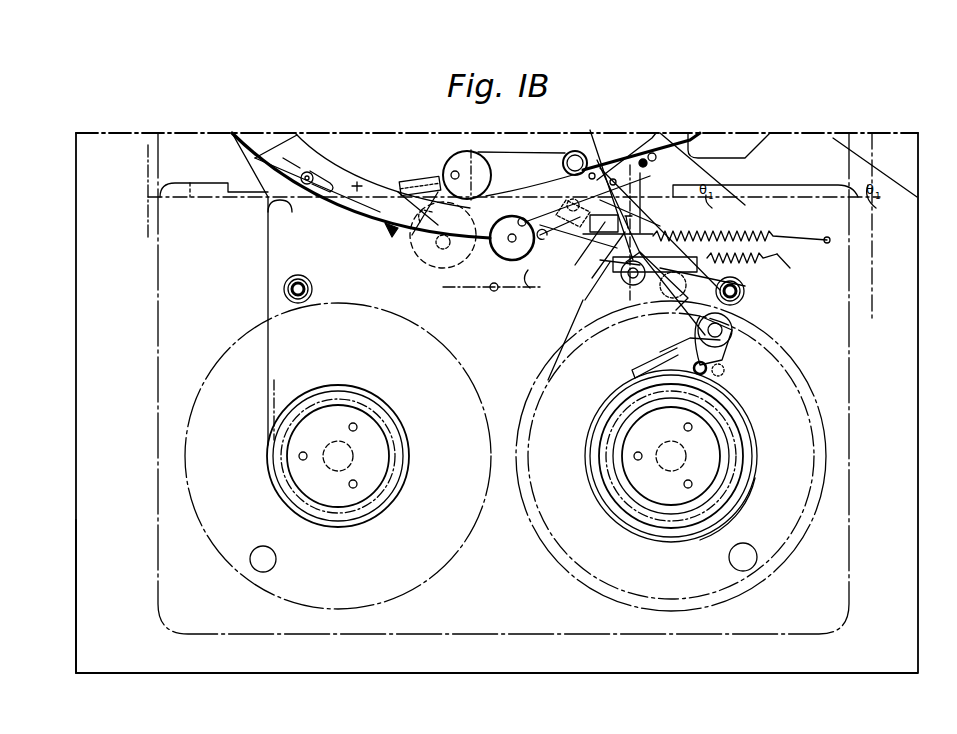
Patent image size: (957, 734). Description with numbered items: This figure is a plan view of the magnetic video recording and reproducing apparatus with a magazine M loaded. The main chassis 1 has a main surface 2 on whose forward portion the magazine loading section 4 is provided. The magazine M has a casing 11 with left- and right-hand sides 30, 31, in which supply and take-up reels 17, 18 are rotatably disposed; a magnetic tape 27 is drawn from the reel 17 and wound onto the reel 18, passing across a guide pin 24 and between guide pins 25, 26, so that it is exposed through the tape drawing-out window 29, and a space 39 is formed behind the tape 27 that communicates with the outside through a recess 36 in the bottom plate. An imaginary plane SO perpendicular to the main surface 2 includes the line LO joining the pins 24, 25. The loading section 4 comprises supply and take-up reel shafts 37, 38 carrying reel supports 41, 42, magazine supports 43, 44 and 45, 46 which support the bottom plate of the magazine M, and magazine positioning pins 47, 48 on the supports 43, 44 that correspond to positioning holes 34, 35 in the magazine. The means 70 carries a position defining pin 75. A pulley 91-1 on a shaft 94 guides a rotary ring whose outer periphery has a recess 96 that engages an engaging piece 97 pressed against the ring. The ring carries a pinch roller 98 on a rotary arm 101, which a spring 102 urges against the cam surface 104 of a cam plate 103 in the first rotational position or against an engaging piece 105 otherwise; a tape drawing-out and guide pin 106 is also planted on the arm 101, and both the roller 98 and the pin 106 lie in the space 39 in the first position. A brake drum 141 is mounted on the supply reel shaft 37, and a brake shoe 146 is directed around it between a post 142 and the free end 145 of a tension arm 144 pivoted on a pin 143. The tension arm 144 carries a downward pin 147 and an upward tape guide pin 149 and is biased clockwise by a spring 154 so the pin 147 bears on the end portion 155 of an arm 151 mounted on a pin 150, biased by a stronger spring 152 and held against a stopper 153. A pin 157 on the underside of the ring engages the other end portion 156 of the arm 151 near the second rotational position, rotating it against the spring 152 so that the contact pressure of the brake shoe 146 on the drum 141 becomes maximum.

The main chassis 1 is at (79, 347).
The main surface 2 is at (88, 525).
The magazine loading section 4 is at (496, 351).
The casing 11 is at (160, 254).
The supply reel 17 is at (580, 568).
The take-up reel 18 is at (446, 572).
The guide pin 24 is at (640, 200).
The guide pin 25 is at (288, 206).
The guide pin 26 is at (258, 222).
The magnetic tape 27 is at (562, 334).
The tape drawing-out window 29 is at (664, 190).
The left-hand side 30 is at (848, 368).
The right-hand side 31 is at (158, 398).
The positioning hole 34 is at (744, 286).
The positioning hole 35 is at (312, 289).
The recess 36 is at (494, 292).
The supply reel shaft 37 is at (666, 468).
The take-up reel shaft 38 is at (348, 452).
The space 39 is at (540, 287).
The reel support 41 is at (714, 452).
The reel support 42 is at (382, 450).
The magazine support 43 is at (742, 300).
The magazine support 44 is at (306, 280).
The magazine support 45 is at (729, 557).
The magazine support 46 is at (276, 559).
The magazine positioning pin 47 is at (712, 282).
The magazine positioning pin 48 is at (290, 273).
The means 70 is at (530, 174).
The position defining pin 75 is at (566, 160).
The pulley 91-1 is at (510, 219).
The shaft 94 is at (467, 175).
The recess 96 is at (529, 211).
The engaging piece 97 is at (498, 254).
The pinch roller 98 is at (428, 256).
The rotary arm 101 is at (376, 220).
The spring 102 is at (622, 172).
The cam plate 103 is at (360, 184).
The cam surface 104 is at (413, 184).
The engaging piece 105 is at (336, 178).
The tape drawing-out and guide pin 106 is at (390, 236).
The brake drum 141 is at (740, 423).
The post 142 is at (655, 356).
The pin 143 is at (722, 348).
The tension arm 144 is at (630, 215).
The free end 145 is at (724, 372).
The brake shoe 146 is at (750, 490).
The downward pin 147 is at (649, 256).
The upward tape guide pin 149 is at (590, 182).
The pin 150 is at (652, 281).
The arm 151 is at (606, 282).
The spring 152 is at (708, 238).
The stopper 153 is at (657, 238).
The spring 154 is at (756, 260).
The end portion 155 is at (738, 251).
The other end portion 156 is at (586, 283).
The pin 157 is at (578, 262).
The line LO is at (158, 196).
The magazine M is at (160, 317).
The imaginary plane SO is at (190, 186).